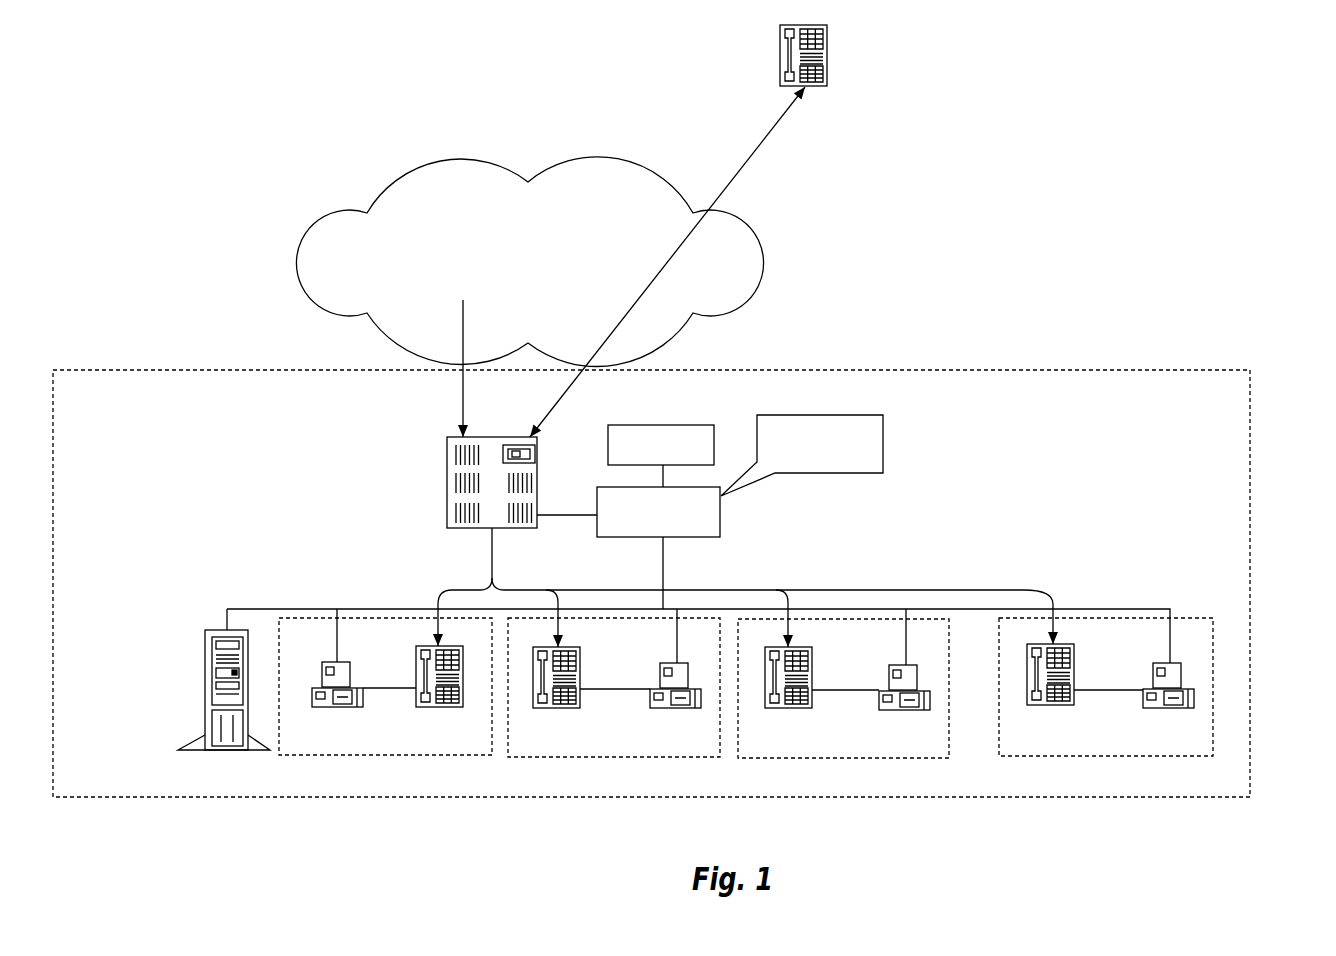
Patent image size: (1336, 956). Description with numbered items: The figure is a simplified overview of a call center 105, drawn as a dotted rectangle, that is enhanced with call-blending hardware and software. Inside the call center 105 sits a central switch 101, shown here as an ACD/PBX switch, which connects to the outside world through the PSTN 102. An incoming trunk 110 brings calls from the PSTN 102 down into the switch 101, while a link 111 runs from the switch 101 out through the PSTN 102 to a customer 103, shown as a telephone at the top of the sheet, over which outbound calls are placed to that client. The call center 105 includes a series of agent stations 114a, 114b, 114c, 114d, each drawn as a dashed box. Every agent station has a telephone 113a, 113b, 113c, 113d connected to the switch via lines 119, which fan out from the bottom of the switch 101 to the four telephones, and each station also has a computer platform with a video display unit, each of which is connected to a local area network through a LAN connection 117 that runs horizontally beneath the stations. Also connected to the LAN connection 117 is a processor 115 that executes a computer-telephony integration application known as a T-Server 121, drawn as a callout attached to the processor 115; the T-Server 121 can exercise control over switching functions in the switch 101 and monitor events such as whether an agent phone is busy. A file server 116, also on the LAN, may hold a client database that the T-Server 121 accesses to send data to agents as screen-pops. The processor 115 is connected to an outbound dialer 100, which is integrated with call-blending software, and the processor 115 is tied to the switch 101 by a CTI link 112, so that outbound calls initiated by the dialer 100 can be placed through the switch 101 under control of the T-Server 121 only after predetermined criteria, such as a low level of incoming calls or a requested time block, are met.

The outbound dialer 100 is at (714, 445).
The central switch 101 is at (447, 488).
The PSTN 102 is at (502, 167).
The customer 103 is at (777, 70).
The call center 105 is at (1250, 445).
The incoming trunk line 110 is at (458, 345).
The link 111 is at (755, 158).
The CTI link 112 is at (547, 513).
The telephone 113a is at (337, 705).
The telephone 113b is at (677, 707).
The telephone 113c is at (907, 708).
The telephone 113d is at (1170, 709).
The agent station 114a is at (417, 755).
The agent station 114b is at (633, 757).
The agent station 114c is at (875, 758).
The agent station 114d is at (1125, 756).
The processor 115 is at (702, 537).
The file server 116 is at (205, 695).
The LAN connection 117 is at (350, 605).
The lines 119 is at (888, 592).
The T-Server 121 is at (883, 452).